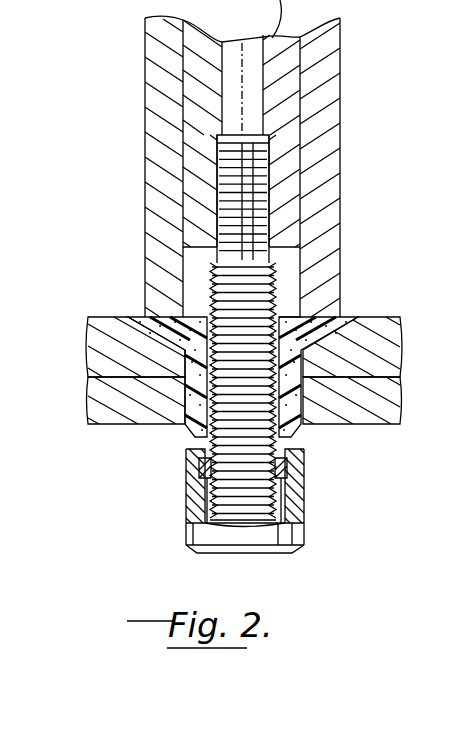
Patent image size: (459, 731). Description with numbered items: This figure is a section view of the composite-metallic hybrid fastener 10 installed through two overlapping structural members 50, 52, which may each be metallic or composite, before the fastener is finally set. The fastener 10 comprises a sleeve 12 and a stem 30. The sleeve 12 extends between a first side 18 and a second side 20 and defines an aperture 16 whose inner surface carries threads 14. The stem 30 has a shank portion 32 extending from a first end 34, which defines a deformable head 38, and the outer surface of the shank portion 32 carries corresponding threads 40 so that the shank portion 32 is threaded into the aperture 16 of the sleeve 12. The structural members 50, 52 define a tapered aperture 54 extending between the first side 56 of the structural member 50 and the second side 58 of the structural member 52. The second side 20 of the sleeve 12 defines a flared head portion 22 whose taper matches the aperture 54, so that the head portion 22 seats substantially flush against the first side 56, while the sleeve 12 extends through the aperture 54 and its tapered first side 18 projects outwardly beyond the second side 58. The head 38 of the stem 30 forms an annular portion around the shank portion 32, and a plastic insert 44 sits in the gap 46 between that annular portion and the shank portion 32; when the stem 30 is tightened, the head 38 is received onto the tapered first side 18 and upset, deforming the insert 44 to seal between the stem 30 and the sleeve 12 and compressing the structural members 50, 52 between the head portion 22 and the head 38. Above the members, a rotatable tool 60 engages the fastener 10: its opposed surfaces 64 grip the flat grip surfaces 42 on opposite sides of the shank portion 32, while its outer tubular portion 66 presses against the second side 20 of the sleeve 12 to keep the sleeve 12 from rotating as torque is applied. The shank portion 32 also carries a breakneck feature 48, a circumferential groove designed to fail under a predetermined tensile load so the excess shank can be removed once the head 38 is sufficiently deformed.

The composite-metallic hybrid fastener 10 is at (232, 322).
The sleeve 12 is at (247, 358).
The threads 14 is at (245, 281).
The aperture 16 is at (287, 304).
The first side 18 is at (300, 490).
The second side 20 is at (235, 347).
The head portion 22 is at (183, 318).
The stem 30 is at (241, 525).
The shank portion 32 is at (197, 428).
The first end 34 is at (270, 555).
The head 38 is at (197, 537).
The threads 40 is at (292, 335).
The flat grip surfaces 42 is at (220, 175).
The plastic insert 44 is at (197, 468).
The gap 46 is at (212, 548).
The breakneck feature 48 is at (190, 375).
The structural member 50 is at (100, 320).
The structural member 52 is at (120, 425).
The aperture 54 is at (297, 428).
The first side 56 is at (387, 317).
The second side 58 is at (390, 425).
The rotatable tool 60 is at (140, 80).
The opposed surfaces 64 is at (262, 185).
The outer tubular portion 66 is at (327, 122).